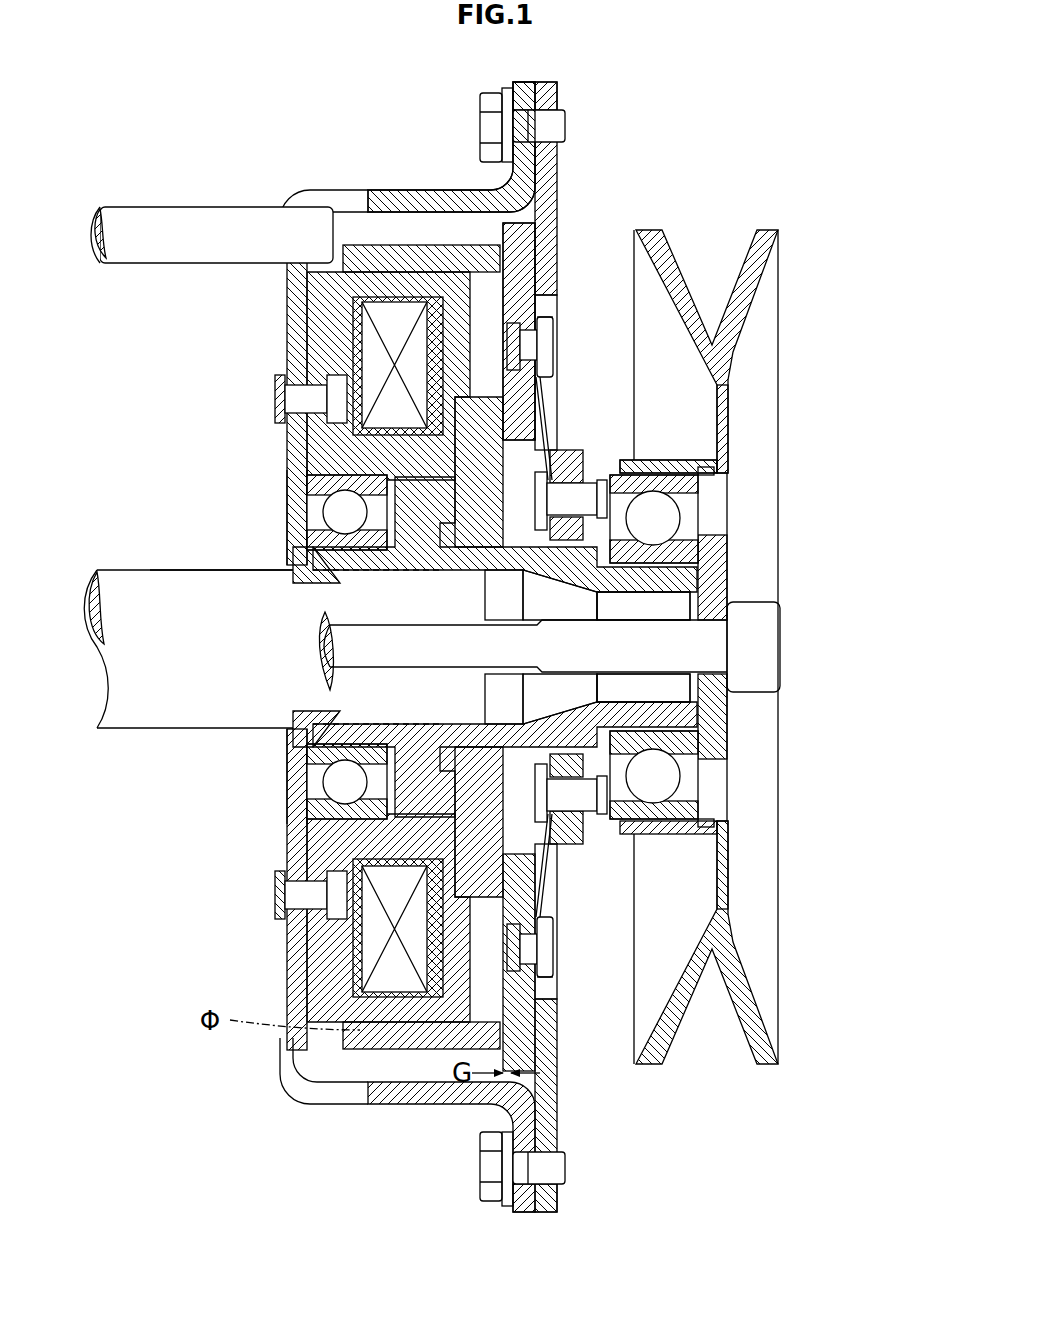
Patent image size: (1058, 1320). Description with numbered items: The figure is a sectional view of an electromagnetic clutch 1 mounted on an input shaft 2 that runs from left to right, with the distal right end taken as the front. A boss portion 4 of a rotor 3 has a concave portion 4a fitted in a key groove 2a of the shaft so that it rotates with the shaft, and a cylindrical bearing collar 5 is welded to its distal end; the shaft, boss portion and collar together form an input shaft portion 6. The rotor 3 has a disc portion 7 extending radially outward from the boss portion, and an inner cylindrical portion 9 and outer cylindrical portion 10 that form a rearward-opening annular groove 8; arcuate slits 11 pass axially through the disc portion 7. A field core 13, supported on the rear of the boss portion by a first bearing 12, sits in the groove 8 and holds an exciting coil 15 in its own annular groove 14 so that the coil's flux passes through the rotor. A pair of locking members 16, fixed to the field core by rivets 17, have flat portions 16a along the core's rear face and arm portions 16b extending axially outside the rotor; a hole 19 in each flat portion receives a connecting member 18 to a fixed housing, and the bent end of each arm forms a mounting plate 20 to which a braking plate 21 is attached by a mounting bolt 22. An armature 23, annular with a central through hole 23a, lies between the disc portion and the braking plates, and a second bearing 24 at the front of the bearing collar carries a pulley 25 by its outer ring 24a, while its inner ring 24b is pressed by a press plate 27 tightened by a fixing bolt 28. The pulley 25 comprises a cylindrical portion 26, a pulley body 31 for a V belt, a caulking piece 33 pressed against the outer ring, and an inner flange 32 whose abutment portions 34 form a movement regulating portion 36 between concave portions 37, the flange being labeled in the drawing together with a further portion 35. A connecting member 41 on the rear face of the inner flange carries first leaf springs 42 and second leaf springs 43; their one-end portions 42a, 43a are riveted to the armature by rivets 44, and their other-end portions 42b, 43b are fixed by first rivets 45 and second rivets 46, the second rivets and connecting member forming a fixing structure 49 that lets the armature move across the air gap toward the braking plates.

The electromagnetic clutch 1 is at (160, 104).
The input shaft 2 is at (120, 730).
The key groove 2a is at (150, 570).
The rotor 3 is at (339, 303).
The boss portion 4 is at (300, 557).
The concave portion 4a is at (325, 575).
The bearing collar 5 is at (715, 580).
The input shaft portion 6 is at (715, 715).
The disc portion 7 is at (380, 340).
The annular groove 8 is at (320, 290).
The inner cylindrical portion 9 is at (330, 505).
The outer cylindrical portion 10 is at (355, 245).
The arcuate slits 11 is at (520, 300).
The first bearing 12 is at (335, 775).
The field core 13 is at (320, 860).
The annular groove 14 is at (350, 1050).
The exciting coil 15 is at (380, 965).
The locking members 16 is at (295, 350).
The flat portions 16a is at (300, 470).
The arm portions 16b is at (430, 200).
The rivets 17 is at (283, 400).
The connecting member 18 is at (150, 207).
The hole 19 is at (330, 200).
The mounting plate 20 is at (522, 88).
The braking plates 21 is at (557, 178).
The mounting bolts 22 is at (566, 127).
The armature 23 is at (540, 222).
The through hole 23a is at (520, 440).
The second bearing 24 is at (733, 518).
The outer ring 24a is at (680, 482).
The inner ring 24b is at (690, 550).
The pulley 25 is at (778, 290).
The cylindrical portion 26 is at (670, 462).
The press plate 27 is at (700, 828).
The fixing bolt 28 is at (780, 650).
The pulley body 31 is at (728, 420).
The inner flange 32 is at (650, 565).
The caulking piece 33 is at (712, 472).
The abutment portions 34 is at (655, 790).
The bearing support 35 is at (643, 688).
The movement regulating portion 36 is at (643, 606).
The concave portions 37 is at (560, 835).
The connecting member 41 is at (568, 450).
The first leaf springs 42 is at (553, 900).
The one-end portions 42a is at (545, 990).
The other-end portions 42b is at (503, 699).
The second leaf springs 43 is at (550, 410).
The one-end portions 43a is at (545, 300).
The other-end portions 43b is at (503, 595).
The rivets 44 is at (553, 345).
The first rivets 45 is at (572, 765).
The second rivets 46 is at (560, 595).
The fixing structure 49 is at (600, 478).